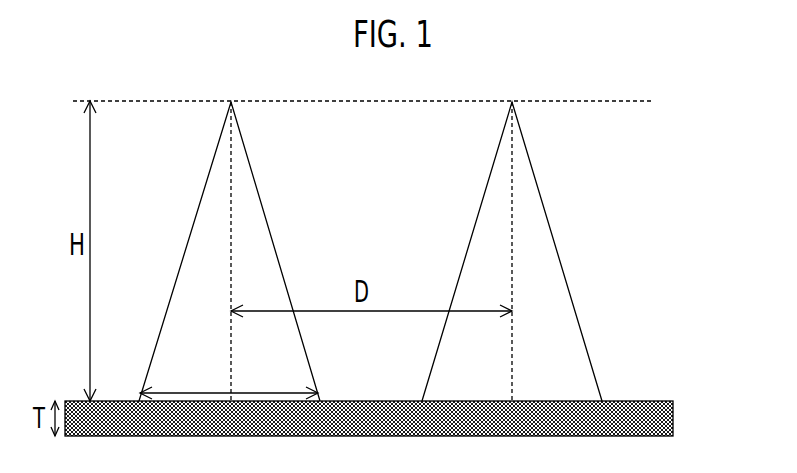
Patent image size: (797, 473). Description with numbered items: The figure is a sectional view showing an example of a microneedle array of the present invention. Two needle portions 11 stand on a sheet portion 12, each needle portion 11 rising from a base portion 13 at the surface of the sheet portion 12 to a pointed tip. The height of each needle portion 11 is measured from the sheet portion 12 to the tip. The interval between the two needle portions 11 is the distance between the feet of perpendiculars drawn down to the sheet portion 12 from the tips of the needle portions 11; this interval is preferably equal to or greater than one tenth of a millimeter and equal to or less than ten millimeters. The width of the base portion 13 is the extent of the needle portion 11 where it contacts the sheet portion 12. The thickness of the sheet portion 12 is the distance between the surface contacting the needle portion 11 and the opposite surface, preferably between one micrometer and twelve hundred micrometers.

The needle portion 11 is at (263, 270).
The sheet portion 12 is at (673, 416).
The base portion 13 is at (229, 382).